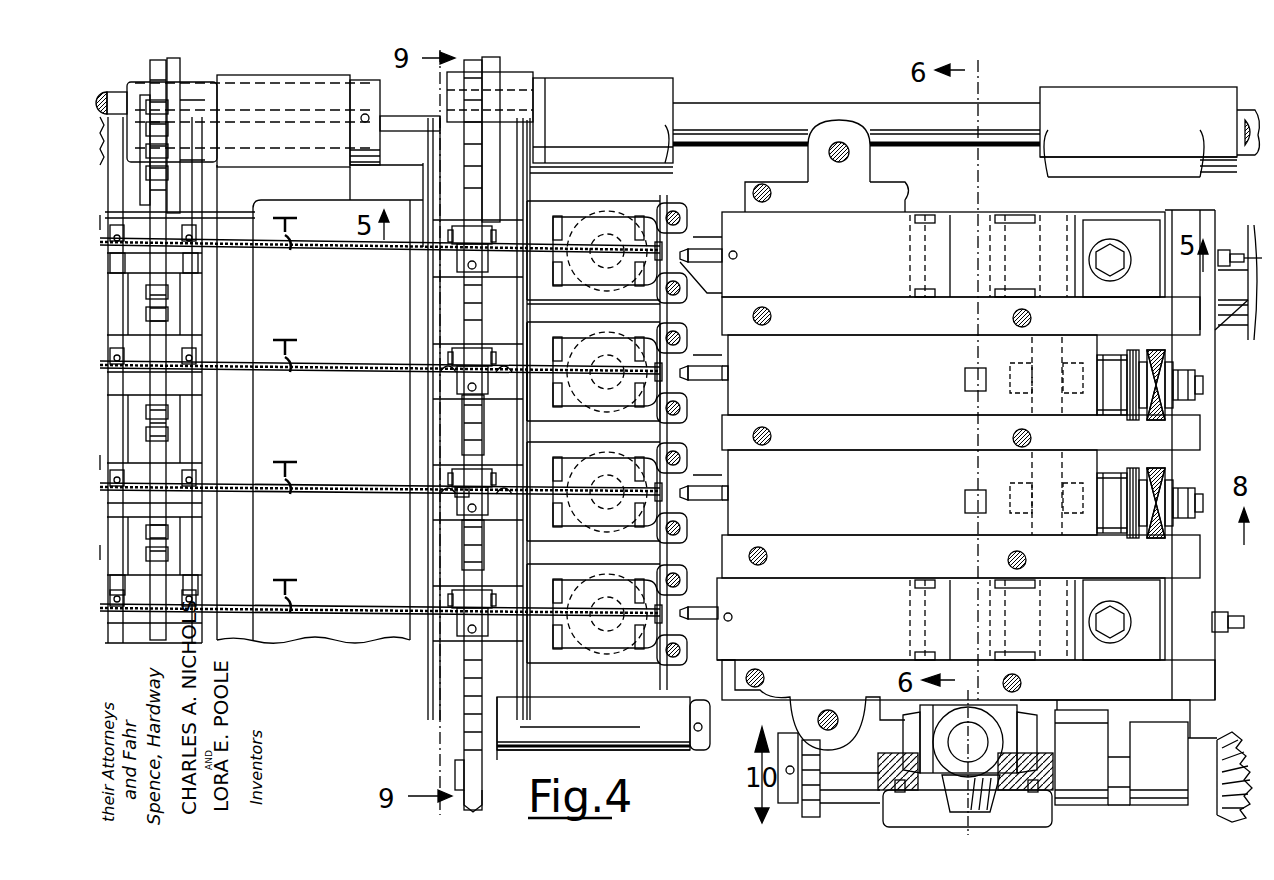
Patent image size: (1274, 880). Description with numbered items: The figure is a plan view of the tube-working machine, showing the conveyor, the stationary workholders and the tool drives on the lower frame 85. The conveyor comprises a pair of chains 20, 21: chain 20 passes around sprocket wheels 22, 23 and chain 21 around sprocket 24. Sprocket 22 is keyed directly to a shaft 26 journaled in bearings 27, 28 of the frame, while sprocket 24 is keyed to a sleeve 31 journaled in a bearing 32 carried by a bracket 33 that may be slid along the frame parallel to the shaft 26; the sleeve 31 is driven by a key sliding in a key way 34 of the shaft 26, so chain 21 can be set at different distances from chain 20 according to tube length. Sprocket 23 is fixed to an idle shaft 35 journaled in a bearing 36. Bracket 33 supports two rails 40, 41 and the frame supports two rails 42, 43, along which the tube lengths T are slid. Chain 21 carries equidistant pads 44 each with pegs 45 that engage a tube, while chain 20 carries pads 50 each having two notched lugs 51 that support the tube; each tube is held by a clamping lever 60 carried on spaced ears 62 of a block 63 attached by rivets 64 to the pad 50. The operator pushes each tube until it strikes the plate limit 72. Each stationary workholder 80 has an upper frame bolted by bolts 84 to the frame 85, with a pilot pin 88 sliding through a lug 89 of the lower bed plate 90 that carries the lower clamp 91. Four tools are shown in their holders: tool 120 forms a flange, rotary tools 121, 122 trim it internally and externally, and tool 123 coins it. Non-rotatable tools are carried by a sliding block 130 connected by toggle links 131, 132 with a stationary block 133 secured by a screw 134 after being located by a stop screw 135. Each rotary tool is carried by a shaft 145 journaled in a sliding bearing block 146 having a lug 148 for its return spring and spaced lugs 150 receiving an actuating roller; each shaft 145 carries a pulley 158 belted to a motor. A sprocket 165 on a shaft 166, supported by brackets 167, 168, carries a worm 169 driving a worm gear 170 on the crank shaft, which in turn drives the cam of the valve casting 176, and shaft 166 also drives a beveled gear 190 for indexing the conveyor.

The chain 20 is at (440, 308).
The chain 21 is at (175, 308).
The sprocket wheel 22 is at (482, 62).
The sprocket wheel 23 is at (466, 792).
The sprocket 24 is at (165, 58).
The shaft 26 is at (728, 108).
The bearing 27 is at (585, 92).
The bearing 28 is at (1078, 100).
The sleeve 31 is at (382, 80).
The bearing 32 is at (258, 72).
The bracket 33 is at (310, 640).
The key way 34 is at (404, 132).
The idle shaft 35 is at (712, 724).
The bearing 36 is at (676, 752).
The rail 40 is at (112, 390).
The rail 41 is at (205, 390).
The rail 42 is at (440, 542).
The rail 43 is at (518, 548).
The pad 44 is at (190, 272).
The peg 45 is at (120, 236).
The pad 50 is at (440, 333).
The lug 51 is at (440, 353).
The clamping lever 60 is at (490, 262).
The ear 62 is at (480, 466).
The block 63 is at (476, 498).
The rivet 64 is at (470, 525).
The plate limit 72 is at (668, 178).
The stationary workholder 80 is at (573, 240).
The bolt 84 is at (772, 194).
The lower frame 85 is at (712, 188).
The pilot pin 88 is at (684, 410).
The lug 89 is at (684, 318).
The lower bed plate 90 is at (578, 418).
The lower clamp 91 is at (540, 384).
The tool 120 is at (706, 252).
The rotary tool 121 is at (706, 370).
The rotary tool 122 is at (706, 488).
The tool 123 is at (706, 606).
The sliding block 130 is at (858, 296).
The toggle link 131 is at (962, 228).
The toggle link 132 is at (1028, 232).
The stationary block 133 is at (1095, 228).
The screw 134 is at (1112, 252).
The stop screw 135 is at (1222, 248).
The shaft 145 is at (1208, 362).
The bearing block 146 is at (890, 452).
The lug 148 is at (965, 380).
The lug 150 is at (1022, 392).
The pulley 158 is at (1158, 468).
The sprocket 165 is at (815, 815).
The shaft 166 is at (1122, 808).
The bracket 167 is at (1068, 805).
The bracket 168 is at (1168, 806).
The worm 169 is at (996, 795).
The worm gear 170 is at (1048, 770).
The valve casting 176 is at (1008, 728).
The beveled gear 190 is at (1238, 730).